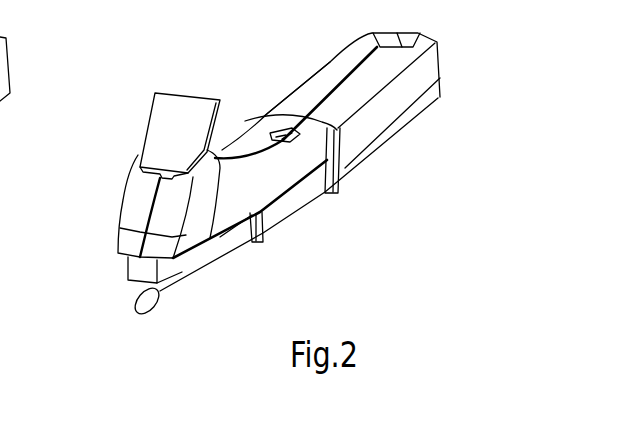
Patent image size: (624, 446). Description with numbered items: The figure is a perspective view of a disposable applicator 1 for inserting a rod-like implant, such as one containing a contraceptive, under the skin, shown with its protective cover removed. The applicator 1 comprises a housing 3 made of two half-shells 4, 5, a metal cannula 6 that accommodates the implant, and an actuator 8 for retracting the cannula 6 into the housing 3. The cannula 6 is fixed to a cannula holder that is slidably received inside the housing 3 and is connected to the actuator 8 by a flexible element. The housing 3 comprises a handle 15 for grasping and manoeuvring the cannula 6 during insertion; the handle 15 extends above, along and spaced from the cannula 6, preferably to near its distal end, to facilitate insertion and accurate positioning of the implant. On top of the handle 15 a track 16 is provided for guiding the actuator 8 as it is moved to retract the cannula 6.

The disposable applicator 1 is at (76, 48).
The housing 3 is at (350, 167).
The half-shell 4 is at (358, 50).
The half-shell 5 is at (363, 147).
The metal cannula 6 is at (170, 288).
The actuator 8 is at (202, 113).
The handle 15 is at (238, 200).
The track 16 is at (272, 136).